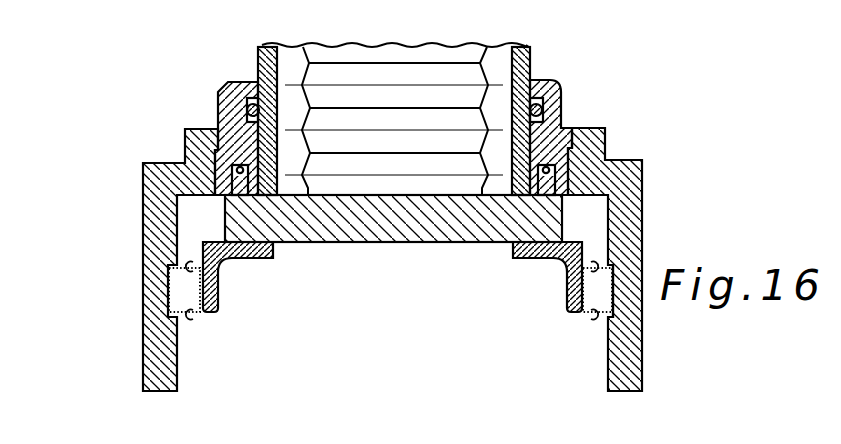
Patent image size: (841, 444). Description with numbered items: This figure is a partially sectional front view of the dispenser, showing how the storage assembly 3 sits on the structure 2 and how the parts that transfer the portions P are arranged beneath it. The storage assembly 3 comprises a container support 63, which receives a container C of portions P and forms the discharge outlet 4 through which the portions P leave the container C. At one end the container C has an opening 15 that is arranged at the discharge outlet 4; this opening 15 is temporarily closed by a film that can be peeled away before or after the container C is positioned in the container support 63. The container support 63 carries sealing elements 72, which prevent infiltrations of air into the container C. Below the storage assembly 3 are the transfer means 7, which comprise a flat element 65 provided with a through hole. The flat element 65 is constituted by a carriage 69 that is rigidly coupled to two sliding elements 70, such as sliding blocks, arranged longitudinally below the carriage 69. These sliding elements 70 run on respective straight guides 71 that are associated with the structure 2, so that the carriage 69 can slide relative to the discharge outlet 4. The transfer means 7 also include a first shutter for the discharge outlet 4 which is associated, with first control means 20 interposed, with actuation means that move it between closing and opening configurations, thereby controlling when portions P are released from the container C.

The structure 2 is at (643, 152).
The storage assembly 3 is at (568, 74).
The discharge outlet 4 is at (507, 197).
The transfer means 7 is at (353, 263).
The opening 15 is at (294, 196).
The first control means 20 is at (170, 315).
The container support 63 is at (242, 82).
The flat element 65 is at (388, 246).
The carriage 69 is at (445, 228).
The sliding elements 70 is at (209, 323).
The straight guides 71 is at (626, 331).
The sealing elements 72 is at (245, 110).
The portions P is at (382, 122).
The container C is at (533, 57).